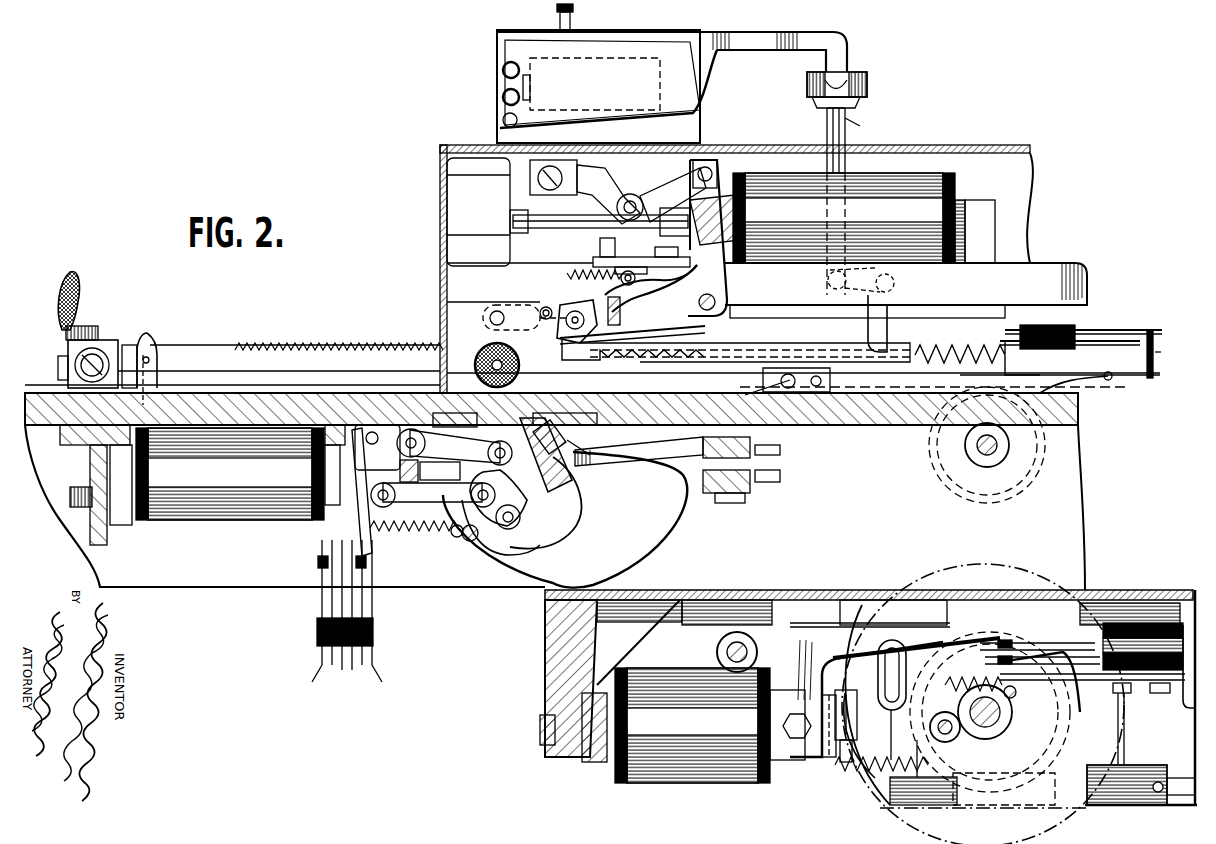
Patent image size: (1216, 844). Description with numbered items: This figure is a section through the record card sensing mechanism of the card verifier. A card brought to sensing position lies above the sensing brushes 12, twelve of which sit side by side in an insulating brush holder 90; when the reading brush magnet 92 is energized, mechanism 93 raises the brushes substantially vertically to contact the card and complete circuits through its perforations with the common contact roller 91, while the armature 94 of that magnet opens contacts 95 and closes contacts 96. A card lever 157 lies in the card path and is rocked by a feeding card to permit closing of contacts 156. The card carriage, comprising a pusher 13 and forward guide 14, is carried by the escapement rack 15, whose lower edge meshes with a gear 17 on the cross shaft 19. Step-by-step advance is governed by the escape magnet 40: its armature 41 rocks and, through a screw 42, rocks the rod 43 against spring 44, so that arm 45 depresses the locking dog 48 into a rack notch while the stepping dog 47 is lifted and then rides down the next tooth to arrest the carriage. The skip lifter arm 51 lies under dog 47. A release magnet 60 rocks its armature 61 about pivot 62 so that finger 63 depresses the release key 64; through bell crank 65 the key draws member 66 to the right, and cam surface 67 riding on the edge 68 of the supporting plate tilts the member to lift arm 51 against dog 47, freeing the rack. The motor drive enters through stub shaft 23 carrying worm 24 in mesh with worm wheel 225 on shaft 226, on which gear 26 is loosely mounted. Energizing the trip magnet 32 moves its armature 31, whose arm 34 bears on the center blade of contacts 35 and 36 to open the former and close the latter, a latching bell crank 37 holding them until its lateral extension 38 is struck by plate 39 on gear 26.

The sensing brushes 12 is at (542, 455).
The pusher 13 is at (775, 400).
The forward guide 14 is at (152, 362).
The escapement rack 15 is at (945, 360).
The gear 17 is at (1010, 482).
The cross shaft 19 is at (995, 447).
The stub shaft 23 is at (1130, 775).
The worm 24 is at (1010, 785).
The gear 26 is at (1127, 729).
The armature 31 is at (864, 698).
The trip magnet 32 is at (680, 763).
The arm 34 is at (898, 600).
The contacts 35 is at (1003, 648).
The contacts 36 is at (1078, 690).
The latching bell crank 37 is at (915, 760).
The lateral extension 38 is at (830, 762).
The plate 39 is at (872, 792).
The escape magnet 40 is at (935, 188).
The armature 41 is at (625, 238).
The screw 42 is at (633, 283).
The rod 43 is at (556, 340).
The spring 44 is at (592, 265).
The arm 45 is at (545, 306).
The stepping dog 47 is at (625, 312).
The locking dog 48 is at (510, 308).
The skip lifter arm 51 is at (660, 335).
The release magnet 60 is at (598, 115).
The armature 61 is at (503, 82).
The pivot 62 is at (503, 121).
The finger 63 is at (835, 45).
The release key 64 is at (868, 87).
The bell crank 65 is at (898, 298).
The member 66 is at (890, 330).
The cam surface 67 is at (633, 366).
The edge of supporting plate 68 is at (608, 366).
The insulating brush holder 90 is at (570, 485).
The common contact roller 91 is at (475, 350).
The reading brush magnet 92 is at (175, 500).
The mechanism 93 is at (485, 540).
The armature 94 is at (352, 480).
The contacts 95 is at (366, 570).
The contacts 96 is at (326, 570).
The contacts 156 is at (1128, 330).
The card lever 157 is at (1095, 380).
The worm wheel 225 is at (993, 712).
The shaft 226 is at (995, 722).